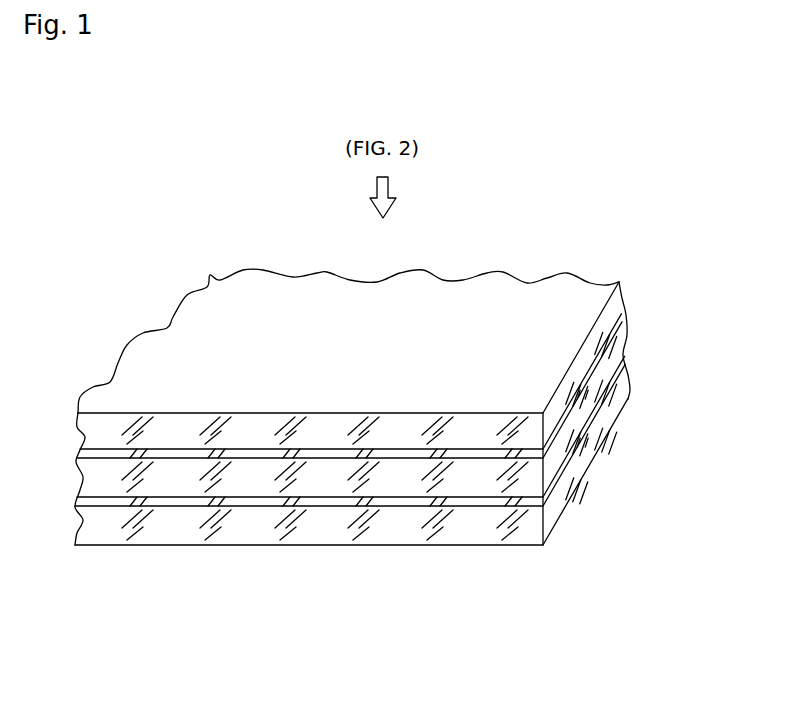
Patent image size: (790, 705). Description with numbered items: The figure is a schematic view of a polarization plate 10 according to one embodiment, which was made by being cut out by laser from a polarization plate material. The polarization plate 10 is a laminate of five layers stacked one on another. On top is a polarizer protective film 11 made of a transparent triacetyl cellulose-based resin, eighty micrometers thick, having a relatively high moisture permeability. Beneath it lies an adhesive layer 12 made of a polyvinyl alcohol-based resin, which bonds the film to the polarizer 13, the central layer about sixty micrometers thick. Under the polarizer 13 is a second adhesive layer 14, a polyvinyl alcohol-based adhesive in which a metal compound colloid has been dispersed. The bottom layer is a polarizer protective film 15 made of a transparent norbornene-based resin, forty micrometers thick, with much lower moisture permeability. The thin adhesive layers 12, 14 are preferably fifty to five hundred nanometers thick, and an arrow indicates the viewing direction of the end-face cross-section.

The polarization plate 10 is at (379, 443).
The polarizer protective film 11 is at (622, 306).
The adhesive layer 12 is at (621, 320).
The polarizer 13 is at (627, 338).
The adhesive layer 14 is at (624, 361).
The polarizer protective film 15 is at (628, 382).